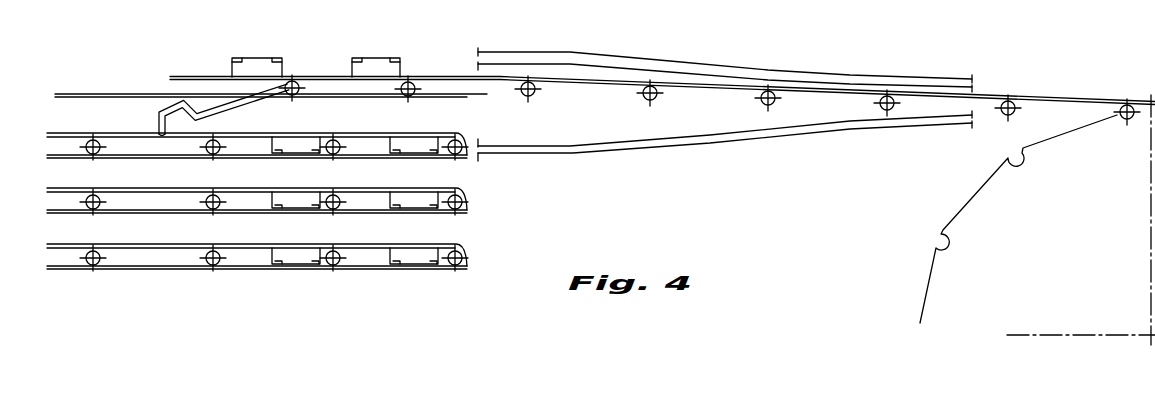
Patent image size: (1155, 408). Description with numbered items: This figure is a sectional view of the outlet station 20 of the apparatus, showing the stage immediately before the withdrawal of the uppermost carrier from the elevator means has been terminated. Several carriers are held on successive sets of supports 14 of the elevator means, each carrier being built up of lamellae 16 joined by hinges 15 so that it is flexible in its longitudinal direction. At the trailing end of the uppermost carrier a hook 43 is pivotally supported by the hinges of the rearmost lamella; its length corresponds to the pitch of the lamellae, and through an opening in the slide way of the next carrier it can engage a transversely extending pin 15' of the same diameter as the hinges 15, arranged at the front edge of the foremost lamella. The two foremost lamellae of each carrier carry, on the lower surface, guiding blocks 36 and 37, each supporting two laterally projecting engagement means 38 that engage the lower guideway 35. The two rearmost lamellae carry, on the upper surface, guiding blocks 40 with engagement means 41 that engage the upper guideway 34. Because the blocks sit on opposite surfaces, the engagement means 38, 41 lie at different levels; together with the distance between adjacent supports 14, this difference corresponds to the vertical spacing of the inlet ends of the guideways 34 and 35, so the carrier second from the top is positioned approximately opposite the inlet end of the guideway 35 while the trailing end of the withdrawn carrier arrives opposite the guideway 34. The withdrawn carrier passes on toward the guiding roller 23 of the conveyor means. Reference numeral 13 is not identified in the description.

The cross beam 13 is at (184, 146).
The supports 14 is at (130, 97).
The hinges 15 is at (610, 173).
The transversely extending pin 15' is at (472, 198).
The lamellae 16 is at (197, 76).
The outlet station 20 is at (497, 165).
The guiding roller 23 is at (972, 208).
The upper guideway 34 is at (683, 63).
The lower guideway 35 is at (652, 147).
The guiding block 36 is at (300, 155).
The guiding block 37 is at (417, 155).
The engagement means 38 is at (277, 155).
The guiding block 40 is at (263, 58).
The engagement means 41 is at (240, 53).
The hook 43 is at (259, 102).